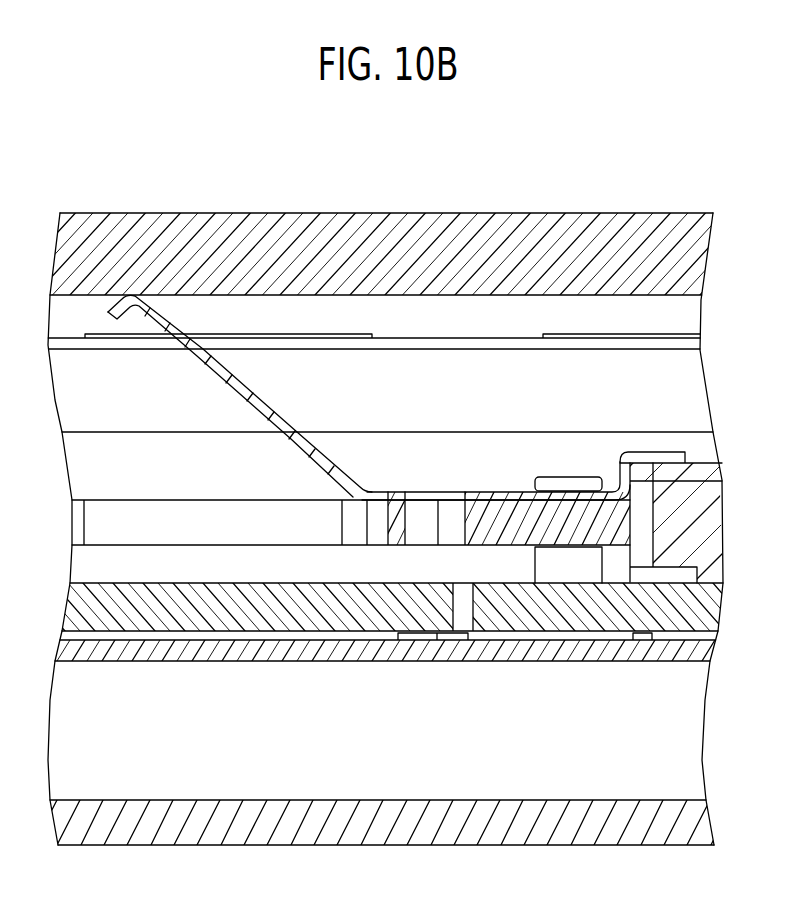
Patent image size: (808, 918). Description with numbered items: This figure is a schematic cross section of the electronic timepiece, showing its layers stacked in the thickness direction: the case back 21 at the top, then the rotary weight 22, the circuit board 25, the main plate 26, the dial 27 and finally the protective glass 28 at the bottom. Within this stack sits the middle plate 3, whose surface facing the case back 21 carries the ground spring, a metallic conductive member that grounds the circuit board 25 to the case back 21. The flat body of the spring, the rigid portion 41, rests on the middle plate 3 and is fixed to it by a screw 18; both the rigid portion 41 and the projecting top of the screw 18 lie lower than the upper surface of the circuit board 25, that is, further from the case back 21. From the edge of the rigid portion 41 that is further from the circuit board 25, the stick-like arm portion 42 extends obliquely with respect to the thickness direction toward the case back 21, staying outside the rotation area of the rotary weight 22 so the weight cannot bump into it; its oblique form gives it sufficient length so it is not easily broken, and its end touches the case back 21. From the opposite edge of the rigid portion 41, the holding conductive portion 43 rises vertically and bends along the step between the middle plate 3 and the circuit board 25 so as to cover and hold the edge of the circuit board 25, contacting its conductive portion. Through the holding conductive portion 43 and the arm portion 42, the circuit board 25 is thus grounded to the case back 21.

The case back 21 is at (677, 262).
The rotary weight 22 is at (725, 295).
The circuit board 25 is at (700, 474).
The middle plate 3 is at (600, 525).
The rigid portion 41 is at (485, 490).
The arm portion 42 is at (163, 318).
The holding conductive portion 43 is at (658, 453).
The screw 18 is at (571, 477).
The main plate 26 is at (678, 610).
The dial 27 is at (688, 650).
The protective glass 28 is at (677, 827).